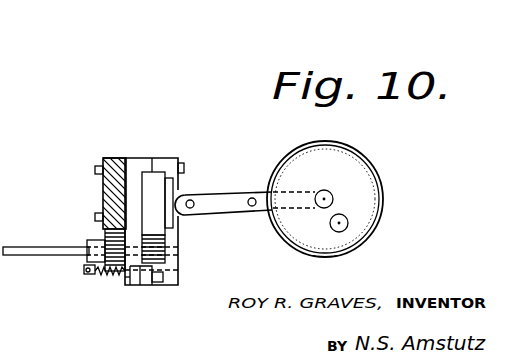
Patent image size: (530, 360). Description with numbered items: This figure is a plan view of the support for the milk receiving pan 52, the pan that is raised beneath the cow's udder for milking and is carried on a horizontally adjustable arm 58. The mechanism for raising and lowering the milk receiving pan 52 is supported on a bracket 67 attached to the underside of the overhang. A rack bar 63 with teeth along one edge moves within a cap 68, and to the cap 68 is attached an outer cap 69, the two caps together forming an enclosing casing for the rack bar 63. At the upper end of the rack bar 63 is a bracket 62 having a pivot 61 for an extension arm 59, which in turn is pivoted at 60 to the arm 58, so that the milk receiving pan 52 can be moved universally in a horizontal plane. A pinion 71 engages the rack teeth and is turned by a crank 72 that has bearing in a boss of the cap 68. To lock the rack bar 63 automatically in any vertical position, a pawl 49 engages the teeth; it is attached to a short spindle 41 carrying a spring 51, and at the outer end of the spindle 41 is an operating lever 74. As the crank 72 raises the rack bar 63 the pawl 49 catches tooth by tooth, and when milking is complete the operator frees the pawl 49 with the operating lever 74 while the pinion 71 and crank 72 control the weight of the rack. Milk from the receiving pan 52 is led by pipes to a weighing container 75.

The short spindle 41 is at (121, 280).
The pawl 49 is at (150, 286).
The spring 51 is at (110, 277).
The milk receiving pan 52 is at (370, 237).
The horizontally adjustable arm 58 is at (300, 192).
The extension arm 59 is at (194, 209).
The pivot 60 is at (253, 197).
The pivot 61 is at (198, 193).
The bracket 62 is at (178, 192).
The rack bar 63 is at (152, 177).
The bracket 67 is at (102, 190).
The cap 68 is at (140, 272).
The outer cap 69 is at (180, 281).
The pinion 71 is at (165, 239).
The crank 72 is at (34, 245).
The operating lever 74 is at (83, 272).
The weighing container 75 is at (97, 235).